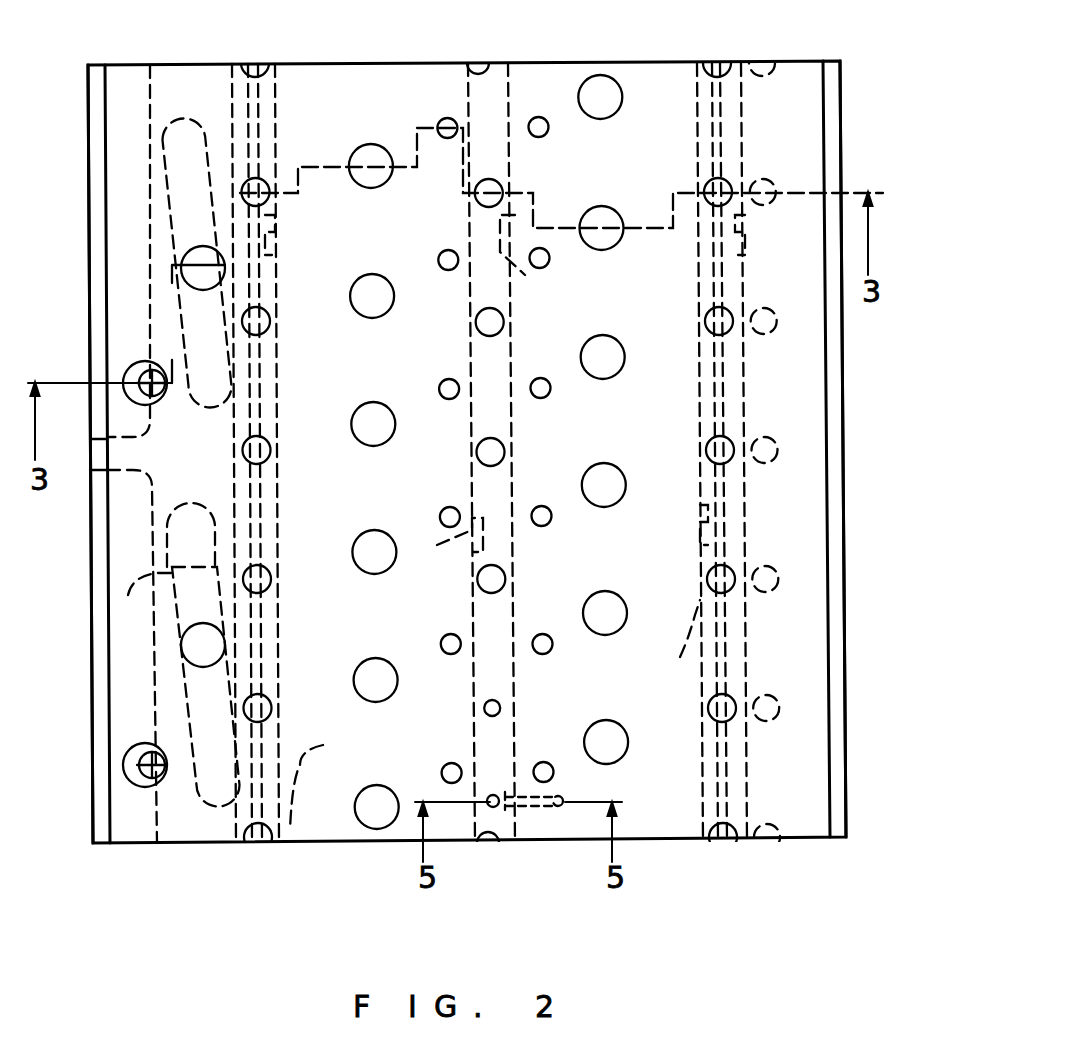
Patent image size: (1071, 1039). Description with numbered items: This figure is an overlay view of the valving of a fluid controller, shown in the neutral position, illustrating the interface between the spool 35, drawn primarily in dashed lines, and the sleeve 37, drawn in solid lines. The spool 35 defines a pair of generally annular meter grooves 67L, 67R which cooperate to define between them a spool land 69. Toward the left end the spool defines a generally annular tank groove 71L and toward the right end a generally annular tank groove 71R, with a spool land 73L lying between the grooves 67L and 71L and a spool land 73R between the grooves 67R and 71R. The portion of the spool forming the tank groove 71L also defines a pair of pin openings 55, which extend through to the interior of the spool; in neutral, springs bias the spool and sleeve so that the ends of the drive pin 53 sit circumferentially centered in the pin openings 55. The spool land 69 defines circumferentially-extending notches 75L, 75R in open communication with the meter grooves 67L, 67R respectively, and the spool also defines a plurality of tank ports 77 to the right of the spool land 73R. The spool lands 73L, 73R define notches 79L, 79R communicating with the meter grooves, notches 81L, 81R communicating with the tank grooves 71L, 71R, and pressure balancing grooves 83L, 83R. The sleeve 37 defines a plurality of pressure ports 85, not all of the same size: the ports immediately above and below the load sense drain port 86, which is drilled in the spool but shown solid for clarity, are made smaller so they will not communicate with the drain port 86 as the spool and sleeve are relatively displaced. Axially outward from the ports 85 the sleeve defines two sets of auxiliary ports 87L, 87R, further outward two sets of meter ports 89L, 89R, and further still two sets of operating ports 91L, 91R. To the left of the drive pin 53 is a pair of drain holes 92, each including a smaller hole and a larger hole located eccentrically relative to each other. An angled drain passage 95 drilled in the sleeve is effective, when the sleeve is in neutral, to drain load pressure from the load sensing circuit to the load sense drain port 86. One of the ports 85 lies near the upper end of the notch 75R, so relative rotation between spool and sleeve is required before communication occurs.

The spool 35 is at (842, 95).
The sleeve 37 is at (103, 98).
The drive pin 53 is at (200, 270).
The pin openings 55 is at (200, 115).
The meter groove 67L is at (375, 100).
The meter groove 67R is at (655, 100).
The spool land 69 is at (510, 100).
The tank groove 71L is at (177, 815).
The tank groove 71R is at (793, 790).
The spool land 73L is at (335, 773).
The spool land 73R is at (656, 637).
The circumferentially-extending notch 75L is at (448, 550).
The circumferentially-extending notch 75R is at (518, 268).
The tank ports 77 is at (772, 335).
The circumferentially-extending notch 79L is at (275, 242).
The circumferentially-extending notch 79R is at (703, 517).
The circumferentially-extending notch 81L is at (240, 520).
The circumferentially-extending notch 81R is at (745, 230).
The pressure balancing groove 83L is at (265, 580).
The pressure balancing groove 83R is at (712, 708).
The pressure ports 85 is at (492, 322).
The load sense drain port 86 is at (495, 800).
The auxiliary ports 87L is at (449, 517).
The auxiliary ports 87R is at (540, 388).
The meter ports 89L is at (374, 318).
The meter ports 89R is at (605, 118).
The operating ports 91L is at (262, 453).
The operating ports 91R is at (712, 321).
The drain holes 92 is at (145, 378).
The angled drain passage 95 is at (545, 808).